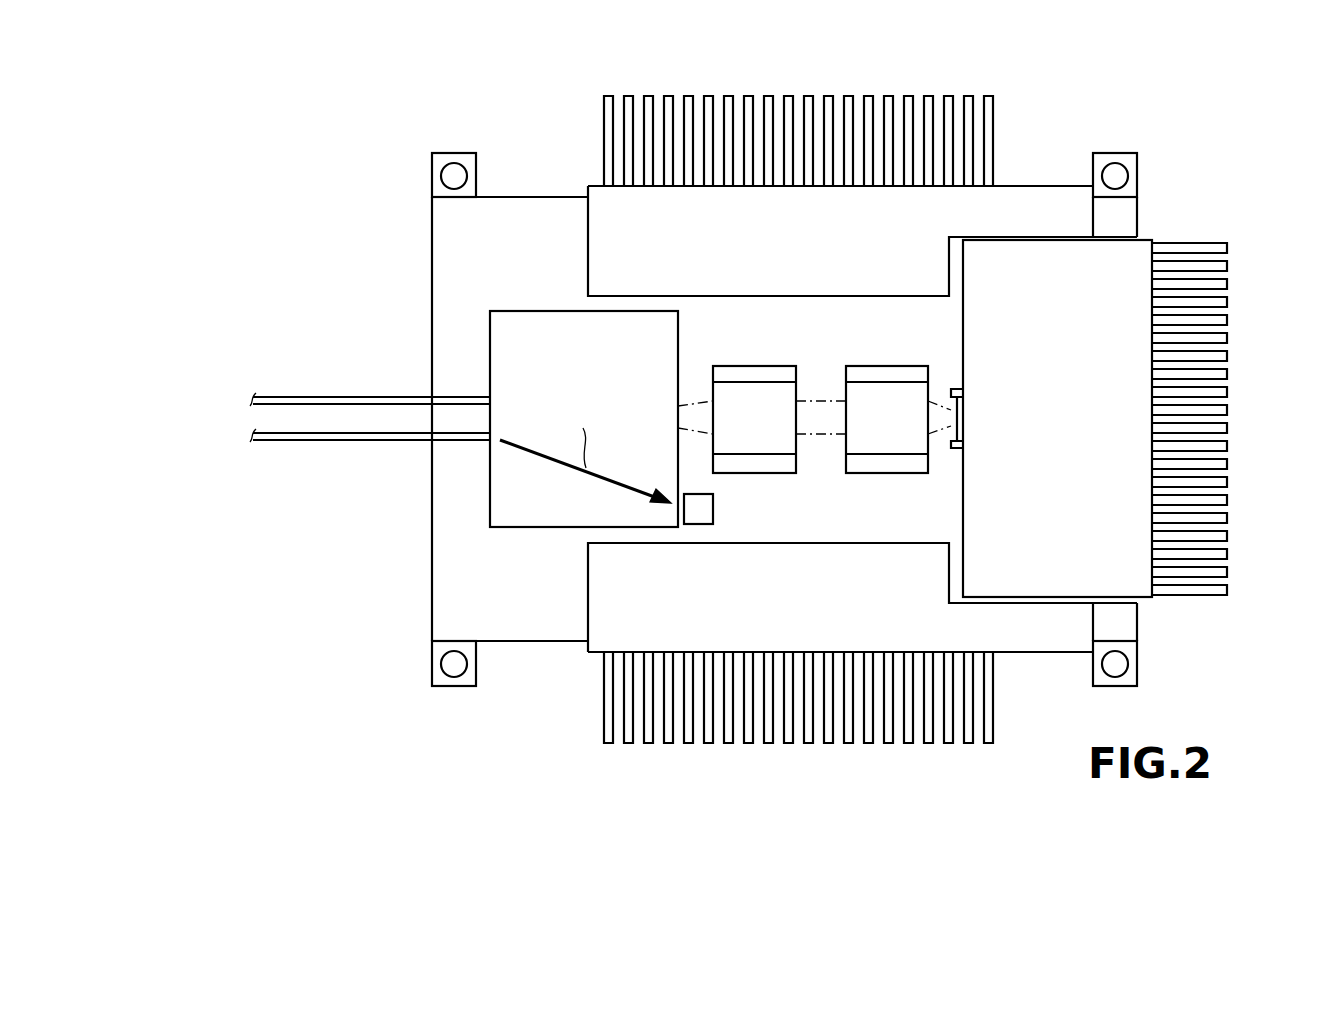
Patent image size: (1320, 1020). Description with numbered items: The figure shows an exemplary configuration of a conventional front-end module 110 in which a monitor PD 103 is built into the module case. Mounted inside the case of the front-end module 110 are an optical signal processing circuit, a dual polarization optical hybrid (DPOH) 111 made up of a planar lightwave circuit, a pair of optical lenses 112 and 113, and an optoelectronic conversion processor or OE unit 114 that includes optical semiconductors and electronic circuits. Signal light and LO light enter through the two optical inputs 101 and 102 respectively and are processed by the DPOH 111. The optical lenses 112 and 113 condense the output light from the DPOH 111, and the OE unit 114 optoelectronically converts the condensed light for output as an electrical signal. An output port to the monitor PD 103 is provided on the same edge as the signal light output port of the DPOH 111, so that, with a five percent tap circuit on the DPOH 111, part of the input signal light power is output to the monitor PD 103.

The front-end module 110 is at (1224, 116).
The optical signal processing circuit (dual polarization optical hybrid, DPOH) 111 is at (525, 310).
The optical lens 112 is at (755, 365).
The optical lens 113 is at (888, 365).
The optoelectronic conversion processor (OE unit) 114 is at (1148, 240).
The monitor PD 103 is at (714, 508).
The optical input 101 is at (310, 395).
The optical input 102 is at (310, 442).